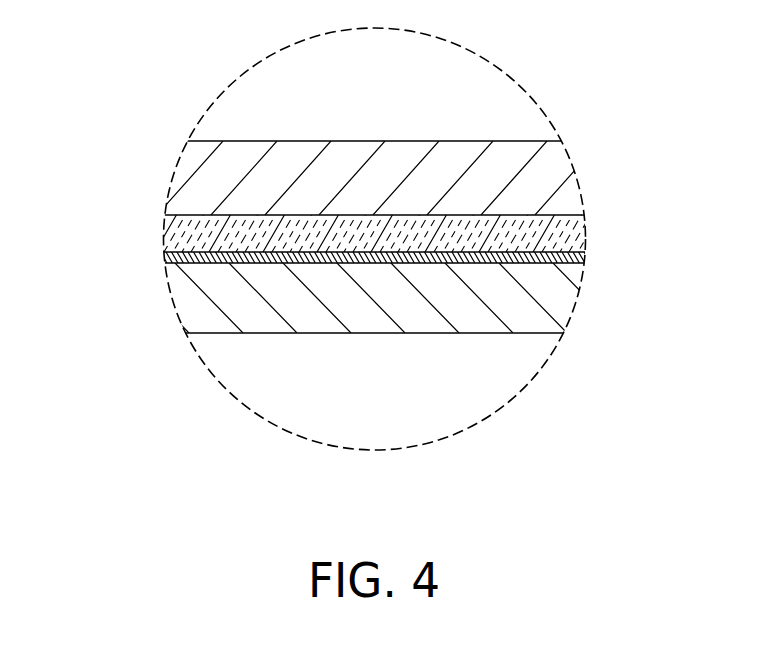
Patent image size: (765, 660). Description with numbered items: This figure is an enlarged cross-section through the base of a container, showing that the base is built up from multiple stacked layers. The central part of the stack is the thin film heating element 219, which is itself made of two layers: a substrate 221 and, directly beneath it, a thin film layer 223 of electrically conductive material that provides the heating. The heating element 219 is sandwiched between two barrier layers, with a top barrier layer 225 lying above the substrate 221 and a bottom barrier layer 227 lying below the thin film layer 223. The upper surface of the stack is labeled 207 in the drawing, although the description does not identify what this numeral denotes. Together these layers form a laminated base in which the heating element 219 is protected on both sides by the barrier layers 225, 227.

The layered structure 207 is at (465, 142).
The thin film heating element 219 is at (374, 251).
The substrate 221 is at (570, 232).
The thin film layer 223 is at (583, 258).
The top barrier layer 225 is at (218, 172).
The bottom barrier layer 227 is at (555, 300).